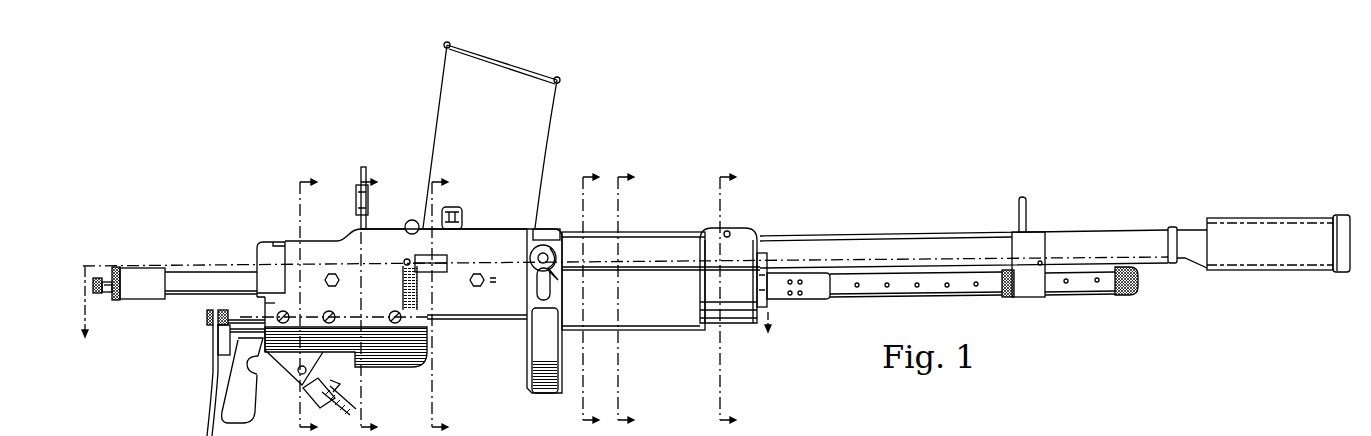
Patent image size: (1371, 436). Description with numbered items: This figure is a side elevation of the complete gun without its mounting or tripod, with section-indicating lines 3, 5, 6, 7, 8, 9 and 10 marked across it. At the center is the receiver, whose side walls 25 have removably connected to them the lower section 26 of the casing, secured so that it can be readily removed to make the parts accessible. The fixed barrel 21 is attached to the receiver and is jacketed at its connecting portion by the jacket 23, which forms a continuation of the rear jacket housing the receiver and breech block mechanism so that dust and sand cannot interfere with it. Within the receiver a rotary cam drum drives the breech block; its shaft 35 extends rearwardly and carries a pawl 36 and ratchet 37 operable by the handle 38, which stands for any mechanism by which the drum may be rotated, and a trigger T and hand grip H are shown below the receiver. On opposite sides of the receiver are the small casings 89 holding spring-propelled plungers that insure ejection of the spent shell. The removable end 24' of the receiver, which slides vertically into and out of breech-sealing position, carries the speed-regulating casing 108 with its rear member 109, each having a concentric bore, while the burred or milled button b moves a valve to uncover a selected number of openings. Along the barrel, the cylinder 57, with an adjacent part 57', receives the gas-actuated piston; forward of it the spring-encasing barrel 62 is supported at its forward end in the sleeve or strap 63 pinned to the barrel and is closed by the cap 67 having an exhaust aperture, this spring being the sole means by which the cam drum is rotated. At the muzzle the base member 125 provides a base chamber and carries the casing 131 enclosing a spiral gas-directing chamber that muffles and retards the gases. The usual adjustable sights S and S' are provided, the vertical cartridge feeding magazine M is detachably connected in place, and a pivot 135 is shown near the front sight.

The burred or milled button b is at (97, 278).
The rear member of speed-regulating casing 109 is at (143, 268).
The speed-regulating casing 108 is at (203, 272).
The removable end of the receiver 24' is at (263, 246).
The side walls of the receiver 25 is at (275, 303).
The pawl 36 is at (222, 320).
The shaft 35 is at (226, 345).
The ratchet 37 is at (247, 322).
The handle 38 is at (212, 380).
The trigger T is at (257, 370).
The hand grip H is at (242, 402).
The lower section of the casing 26 is at (406, 353).
The sight S is at (375, 198).
The pivot 135 is at (409, 221).
The casing 89 is at (440, 258).
The vertical cartridge feeding magazine M is at (528, 154).
The jacket 23 is at (677, 320).
The fixed barrel 21 is at (882, 240).
The cylinder 57 is at (800, 307).
The hole 57' is at (795, 316).
The spring-encasing barrel 62 is at (963, 297).
The sleeve or strap 63 is at (1018, 240).
The sight S' is at (1040, 213).
The cap 67 is at (1139, 284).
The base member 125 is at (1208, 220).
The casing 131 is at (1247, 222).
The section line 3 is at (428, 315).
The section line 5 is at (312, 298).
The section line 6 is at (373, 297).
The section line 7 is at (445, 297).
The section line 8 is at (596, 295).
The section line 9 is at (630, 295).
The section line 10 is at (733, 295).